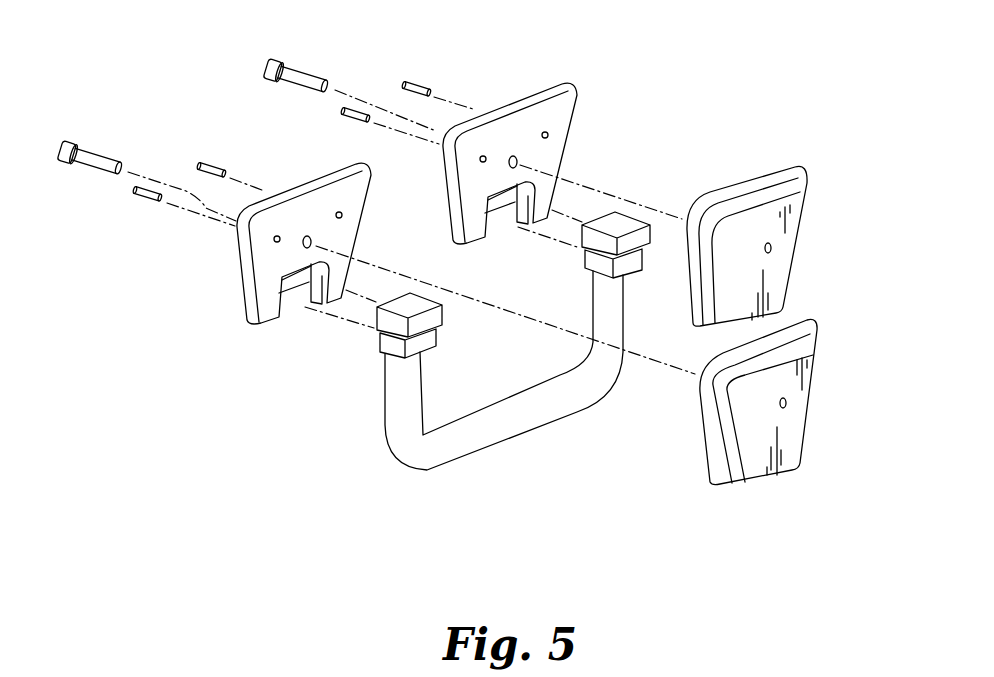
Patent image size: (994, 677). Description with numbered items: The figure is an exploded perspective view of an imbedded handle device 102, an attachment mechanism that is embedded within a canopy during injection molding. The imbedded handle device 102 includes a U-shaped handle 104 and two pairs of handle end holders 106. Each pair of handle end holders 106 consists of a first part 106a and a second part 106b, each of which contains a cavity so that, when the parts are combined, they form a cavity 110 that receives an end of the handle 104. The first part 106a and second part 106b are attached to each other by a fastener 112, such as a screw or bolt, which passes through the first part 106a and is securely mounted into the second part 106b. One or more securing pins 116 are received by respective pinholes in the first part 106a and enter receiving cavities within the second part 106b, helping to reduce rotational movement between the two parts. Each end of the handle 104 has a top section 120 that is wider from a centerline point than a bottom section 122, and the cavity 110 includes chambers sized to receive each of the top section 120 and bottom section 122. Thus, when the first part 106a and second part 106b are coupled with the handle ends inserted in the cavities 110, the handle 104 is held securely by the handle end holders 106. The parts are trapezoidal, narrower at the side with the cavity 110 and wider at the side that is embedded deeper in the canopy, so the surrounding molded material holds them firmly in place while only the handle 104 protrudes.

The imbedded handle device 102 is at (489, 275).
The U-shaped handle 104 is at (488, 356).
The handle end holder 106 is at (517, 279).
The first part 106a is at (566, 86).
The second part 106b is at (796, 168).
The cavity 110 is at (499, 215).
The fastener 112 is at (306, 78).
The securing pin 116 is at (353, 118).
The top section 120 is at (592, 238).
The bottom section 122 is at (597, 262).